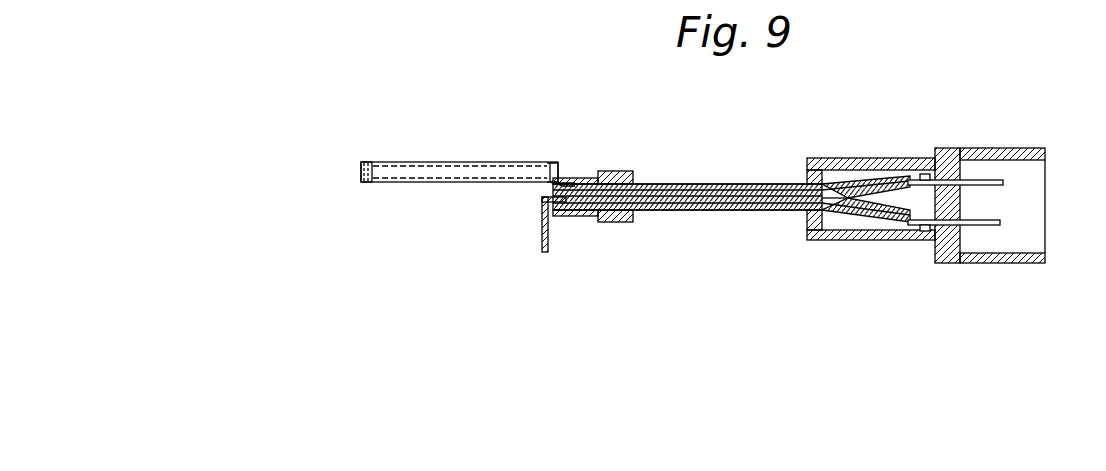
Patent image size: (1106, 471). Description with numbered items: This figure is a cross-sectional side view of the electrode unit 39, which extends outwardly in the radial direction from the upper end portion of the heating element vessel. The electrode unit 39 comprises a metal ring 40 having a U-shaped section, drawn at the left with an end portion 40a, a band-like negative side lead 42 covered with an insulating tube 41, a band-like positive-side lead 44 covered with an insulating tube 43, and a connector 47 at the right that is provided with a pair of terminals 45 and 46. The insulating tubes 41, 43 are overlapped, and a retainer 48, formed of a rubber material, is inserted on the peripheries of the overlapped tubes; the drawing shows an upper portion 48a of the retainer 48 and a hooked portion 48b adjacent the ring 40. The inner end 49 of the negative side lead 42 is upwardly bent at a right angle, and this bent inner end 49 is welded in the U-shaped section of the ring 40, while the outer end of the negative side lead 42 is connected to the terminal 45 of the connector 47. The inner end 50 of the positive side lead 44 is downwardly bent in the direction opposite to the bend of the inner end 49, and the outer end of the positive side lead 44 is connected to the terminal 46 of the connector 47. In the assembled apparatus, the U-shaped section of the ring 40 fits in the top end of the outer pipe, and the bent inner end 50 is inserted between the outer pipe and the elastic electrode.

The electrode unit 39 is at (731, 186).
The metal ring 40 is at (392, 171).
The end cap of tube 40a is at (361, 173).
The insulating tube 41 is at (690, 184).
The negative side lead 42 is at (664, 184).
The insulating tube 43 is at (720, 212).
The positive-side lead 44 is at (665, 212).
The terminal 45 is at (1003, 183).
The terminal 46 is at (1000, 223).
The connector 47 is at (949, 153).
The retainer 48 is at (606, 212).
The upper portion of clamp 48a is at (622, 171).
The hook portion of clamp 48b is at (559, 168).
The inner end of the negative side lead 49 is at (549, 187).
The inner end of the positive side lead 50 is at (541, 232).